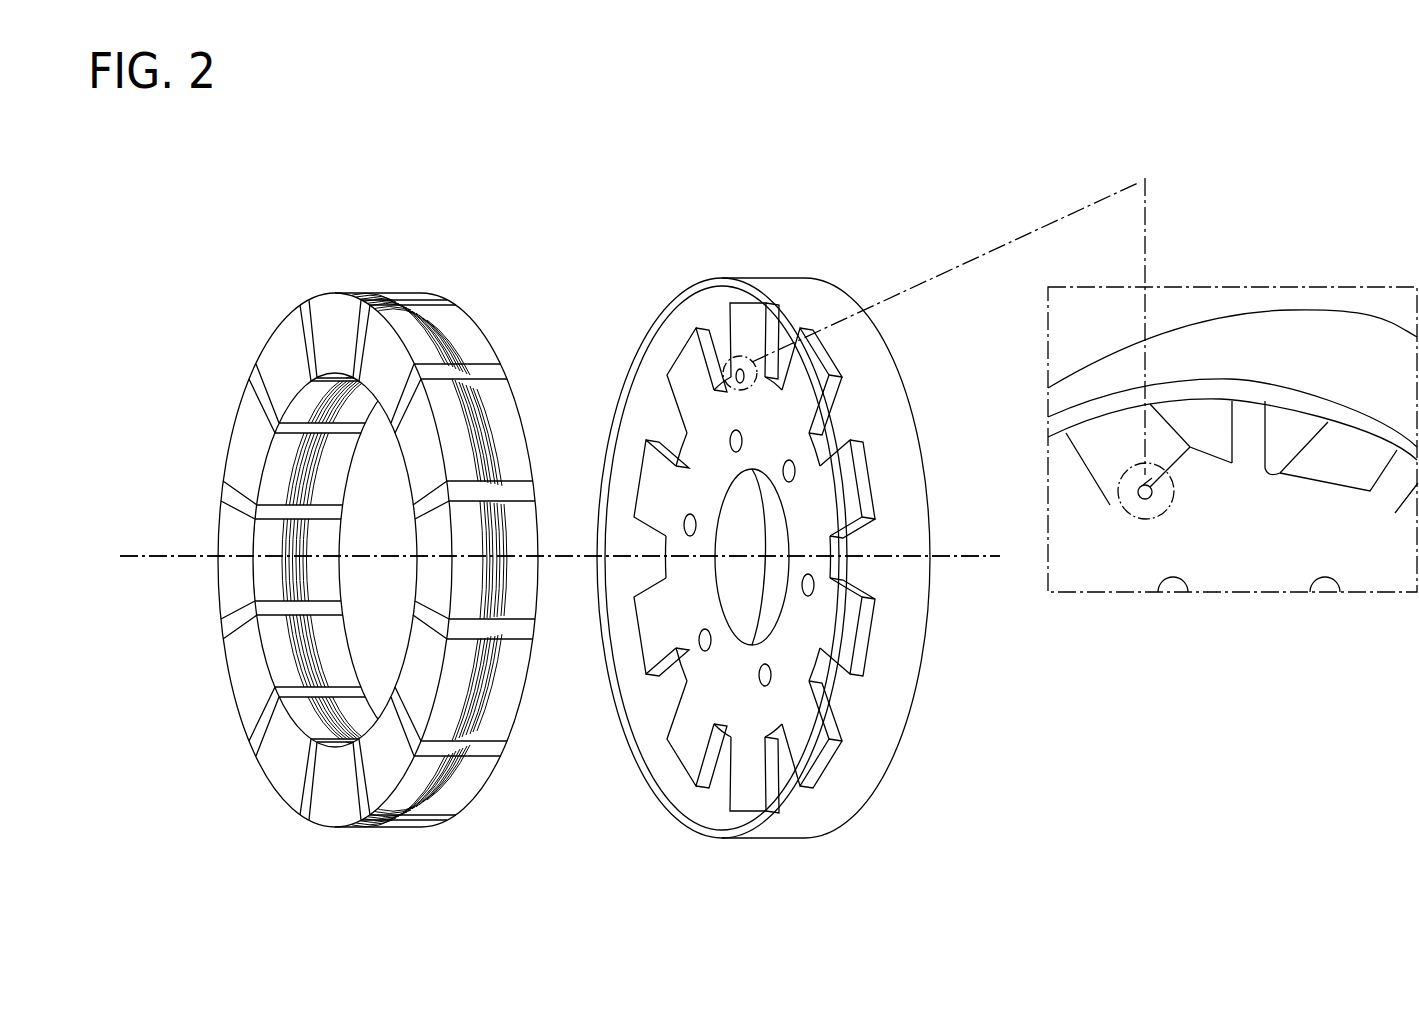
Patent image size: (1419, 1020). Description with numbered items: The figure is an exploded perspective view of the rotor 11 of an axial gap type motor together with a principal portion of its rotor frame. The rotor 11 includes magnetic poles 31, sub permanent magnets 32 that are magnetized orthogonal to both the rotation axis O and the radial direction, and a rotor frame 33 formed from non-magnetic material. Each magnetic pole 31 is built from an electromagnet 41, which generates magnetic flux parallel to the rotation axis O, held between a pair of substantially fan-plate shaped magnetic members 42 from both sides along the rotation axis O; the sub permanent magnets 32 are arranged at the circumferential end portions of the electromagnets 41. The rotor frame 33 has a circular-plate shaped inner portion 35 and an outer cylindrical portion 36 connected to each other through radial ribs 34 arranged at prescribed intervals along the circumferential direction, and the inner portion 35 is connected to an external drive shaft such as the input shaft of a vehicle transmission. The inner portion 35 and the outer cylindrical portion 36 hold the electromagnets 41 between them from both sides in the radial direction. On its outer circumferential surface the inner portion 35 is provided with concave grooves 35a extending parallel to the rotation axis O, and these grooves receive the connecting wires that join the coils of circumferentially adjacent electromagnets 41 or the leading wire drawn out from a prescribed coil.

The rotor 11 is at (882, 158).
The rotation axis O is at (135, 562).
The magnetic pole 31 is at (389, 497).
The sub permanent magnet 32 is at (356, 330).
The electromagnet 41 is at (413, 302).
The magnetic member 42 is at (392, 300).
The rotor frame 33 is at (1008, 508).
The radial rib 34 is at (722, 330).
The inner portion 35 is at (690, 470).
The concave groove 35a is at (1145, 500).
The outer cylindrical portion 36 is at (799, 300).